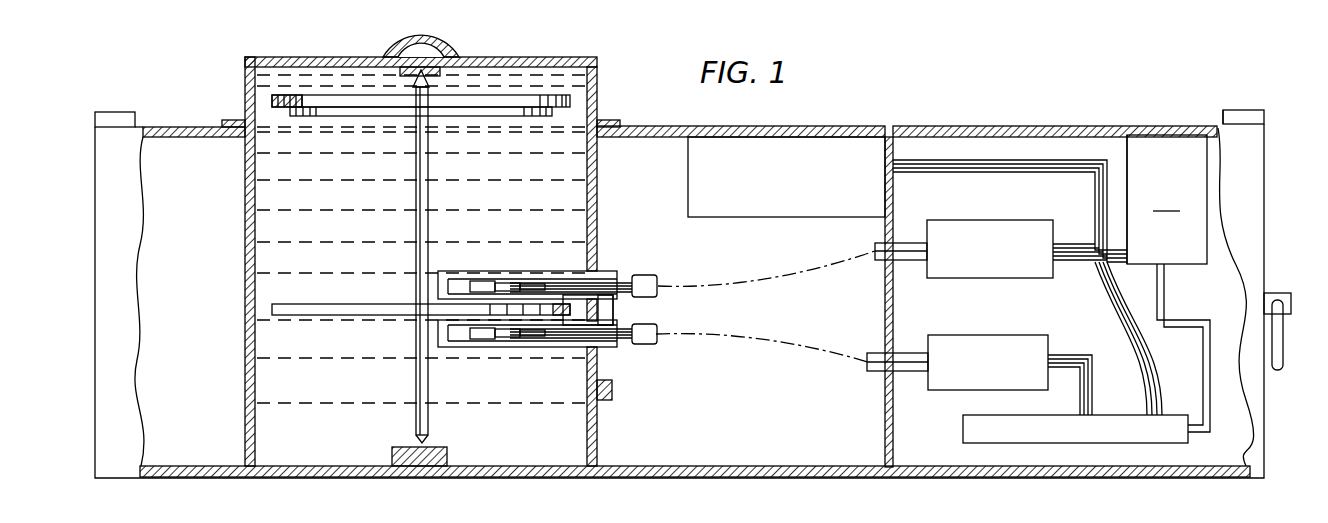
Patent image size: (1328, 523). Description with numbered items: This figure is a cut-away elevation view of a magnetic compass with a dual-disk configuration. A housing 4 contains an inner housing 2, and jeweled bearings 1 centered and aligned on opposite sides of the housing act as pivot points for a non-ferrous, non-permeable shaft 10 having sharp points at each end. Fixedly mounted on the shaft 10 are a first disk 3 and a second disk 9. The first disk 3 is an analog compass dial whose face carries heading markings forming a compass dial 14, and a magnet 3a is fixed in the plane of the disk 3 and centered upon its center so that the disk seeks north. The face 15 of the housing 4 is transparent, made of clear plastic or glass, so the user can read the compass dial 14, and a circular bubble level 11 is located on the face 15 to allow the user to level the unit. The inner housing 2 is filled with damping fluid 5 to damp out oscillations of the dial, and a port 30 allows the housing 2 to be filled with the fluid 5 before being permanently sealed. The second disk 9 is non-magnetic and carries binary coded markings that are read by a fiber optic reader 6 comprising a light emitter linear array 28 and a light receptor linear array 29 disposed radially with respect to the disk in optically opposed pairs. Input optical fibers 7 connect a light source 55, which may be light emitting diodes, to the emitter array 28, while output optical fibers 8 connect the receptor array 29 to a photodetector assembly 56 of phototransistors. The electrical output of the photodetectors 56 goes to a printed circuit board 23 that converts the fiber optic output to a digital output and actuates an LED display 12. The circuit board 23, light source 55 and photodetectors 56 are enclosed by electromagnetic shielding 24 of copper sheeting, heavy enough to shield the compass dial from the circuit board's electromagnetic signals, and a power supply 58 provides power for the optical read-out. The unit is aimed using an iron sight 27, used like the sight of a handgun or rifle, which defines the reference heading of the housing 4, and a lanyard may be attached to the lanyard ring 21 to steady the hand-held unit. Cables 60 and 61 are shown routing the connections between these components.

The jeweled bearings 1 is at (388, 74).
The inner housing 2 is at (245, 296).
The first disk 3 is at (571, 100).
The magnet 3a is at (300, 118).
The housing 4 is at (722, 127).
The damping fluid 5 is at (556, 210).
The fiber optic reader 6 is at (604, 308).
The input optical fibers 7 is at (655, 278).
The output optical fibers 8 is at (657, 341).
The second disk 9 is at (335, 305).
The shaft 10 is at (433, 212).
The circular bubble level 11 is at (450, 55).
The LED display 12 is at (840, 145).
The compass dial 14 is at (283, 97).
The face 15 is at (555, 57).
The lanyard ring 21 is at (1285, 346).
The printed circuit board 23 is at (963, 437).
The electromagnetic shielding 24 is at (1125, 135).
The iron sight 27 is at (117, 112).
The light emitter linear array 28 is at (537, 271).
The light receptor linear array 29 is at (541, 348).
The port 30 is at (612, 397).
The light source 55 is at (1040, 220).
The photodetector assembly 56 is at (985, 335).
The power supply 58 is at (1168, 283).
The cable 60 is at (985, 160).
The cable 61 is at (1075, 264).